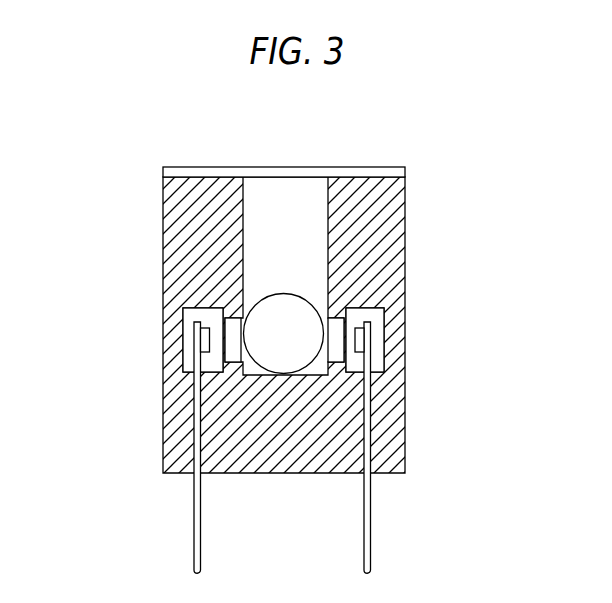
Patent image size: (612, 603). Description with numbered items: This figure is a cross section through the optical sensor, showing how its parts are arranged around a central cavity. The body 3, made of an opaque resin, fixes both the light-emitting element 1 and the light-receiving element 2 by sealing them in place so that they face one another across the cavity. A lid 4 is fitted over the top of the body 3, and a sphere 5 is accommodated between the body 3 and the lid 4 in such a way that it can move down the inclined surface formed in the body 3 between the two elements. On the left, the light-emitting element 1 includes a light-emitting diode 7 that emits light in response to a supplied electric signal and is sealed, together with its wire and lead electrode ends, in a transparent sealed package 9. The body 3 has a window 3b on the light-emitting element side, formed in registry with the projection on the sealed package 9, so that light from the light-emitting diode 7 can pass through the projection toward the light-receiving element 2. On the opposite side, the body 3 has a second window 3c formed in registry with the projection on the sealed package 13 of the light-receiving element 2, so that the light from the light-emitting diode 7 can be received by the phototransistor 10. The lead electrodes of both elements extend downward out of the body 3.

The light-emitting element 1 is at (290, 330).
The light-receiving element 2 is at (335, 325).
The body 3 is at (401, 257).
The window 3b is at (229, 367).
The window 3c is at (333, 372).
The lid 4 is at (366, 167).
The sphere 5 is at (280, 313).
The light-emitting diode 7 is at (205, 323).
The sealed package 9 is at (190, 347).
The phototransistor 10 is at (380, 306).
The sealed package 13 is at (378, 363).